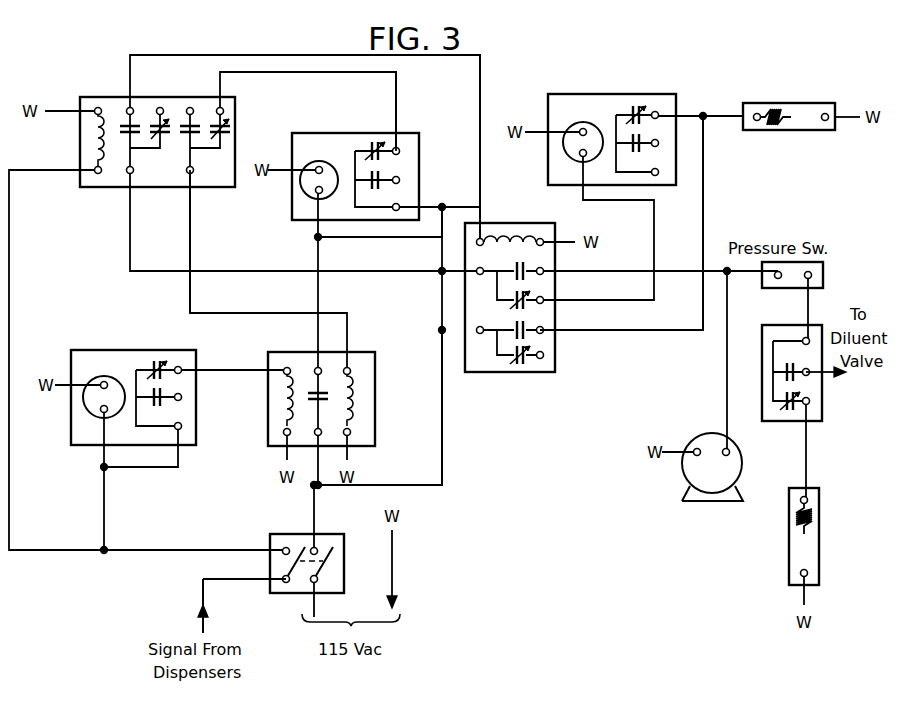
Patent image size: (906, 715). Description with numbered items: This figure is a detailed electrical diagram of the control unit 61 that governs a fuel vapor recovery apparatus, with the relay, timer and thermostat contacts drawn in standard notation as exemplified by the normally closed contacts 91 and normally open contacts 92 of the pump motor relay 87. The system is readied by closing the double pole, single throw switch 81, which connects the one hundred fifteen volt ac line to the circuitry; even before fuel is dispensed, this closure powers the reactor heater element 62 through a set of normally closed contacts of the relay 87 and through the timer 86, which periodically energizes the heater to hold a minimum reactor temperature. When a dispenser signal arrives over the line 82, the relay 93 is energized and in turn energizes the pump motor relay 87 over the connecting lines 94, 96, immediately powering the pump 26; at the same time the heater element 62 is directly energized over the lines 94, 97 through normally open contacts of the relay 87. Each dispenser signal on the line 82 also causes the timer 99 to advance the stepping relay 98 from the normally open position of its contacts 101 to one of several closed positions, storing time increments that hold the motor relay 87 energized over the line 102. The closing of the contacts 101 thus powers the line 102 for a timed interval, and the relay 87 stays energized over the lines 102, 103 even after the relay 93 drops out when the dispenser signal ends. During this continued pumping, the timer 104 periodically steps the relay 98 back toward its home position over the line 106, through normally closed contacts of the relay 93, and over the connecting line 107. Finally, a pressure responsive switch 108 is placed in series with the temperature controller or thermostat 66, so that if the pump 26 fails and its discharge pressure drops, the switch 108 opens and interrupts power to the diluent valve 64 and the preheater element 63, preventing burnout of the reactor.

The pump 26 is at (700, 496).
The control unit 61 is at (565, 68).
The heater element 62 is at (768, 103).
The heater element 63 is at (822, 522).
The diluent valve 64 is at (838, 379).
The temperature controller 66 is at (820, 412).
The double pole, single throw switch 81 is at (325, 540).
The line 82 is at (203, 580).
The timer 86 is at (648, 95).
The pump motor relay 87 is at (557, 362).
The normally closed contacts 91 is at (526, 300).
The normally open contacts 92 is at (526, 268).
The relay 93 is at (85, 97).
The connecting line 94 is at (442, 425).
The connecting line 96 is at (248, 55).
The connecting line 97 is at (640, 333).
The stepping relay 98 is at (374, 410).
The timer 99 is at (104, 352).
The contacts 101 is at (312, 393).
The line 102 is at (320, 296).
The connecting line 103 is at (382, 238).
The timer 104 is at (322, 133).
The line 106 is at (398, 104).
The connecting line 107 is at (192, 234).
The pressure responsive switch 108 is at (826, 280).